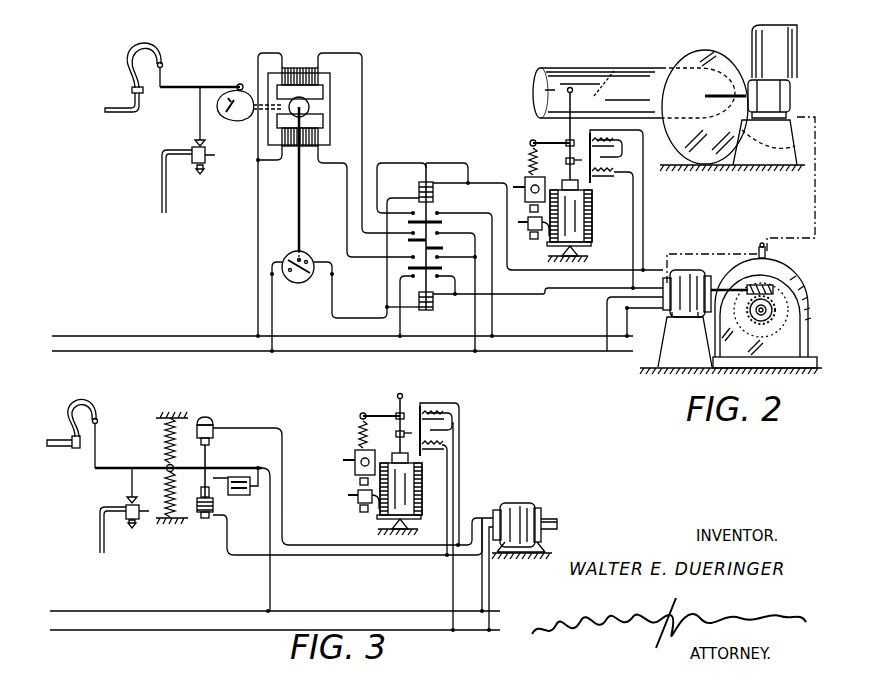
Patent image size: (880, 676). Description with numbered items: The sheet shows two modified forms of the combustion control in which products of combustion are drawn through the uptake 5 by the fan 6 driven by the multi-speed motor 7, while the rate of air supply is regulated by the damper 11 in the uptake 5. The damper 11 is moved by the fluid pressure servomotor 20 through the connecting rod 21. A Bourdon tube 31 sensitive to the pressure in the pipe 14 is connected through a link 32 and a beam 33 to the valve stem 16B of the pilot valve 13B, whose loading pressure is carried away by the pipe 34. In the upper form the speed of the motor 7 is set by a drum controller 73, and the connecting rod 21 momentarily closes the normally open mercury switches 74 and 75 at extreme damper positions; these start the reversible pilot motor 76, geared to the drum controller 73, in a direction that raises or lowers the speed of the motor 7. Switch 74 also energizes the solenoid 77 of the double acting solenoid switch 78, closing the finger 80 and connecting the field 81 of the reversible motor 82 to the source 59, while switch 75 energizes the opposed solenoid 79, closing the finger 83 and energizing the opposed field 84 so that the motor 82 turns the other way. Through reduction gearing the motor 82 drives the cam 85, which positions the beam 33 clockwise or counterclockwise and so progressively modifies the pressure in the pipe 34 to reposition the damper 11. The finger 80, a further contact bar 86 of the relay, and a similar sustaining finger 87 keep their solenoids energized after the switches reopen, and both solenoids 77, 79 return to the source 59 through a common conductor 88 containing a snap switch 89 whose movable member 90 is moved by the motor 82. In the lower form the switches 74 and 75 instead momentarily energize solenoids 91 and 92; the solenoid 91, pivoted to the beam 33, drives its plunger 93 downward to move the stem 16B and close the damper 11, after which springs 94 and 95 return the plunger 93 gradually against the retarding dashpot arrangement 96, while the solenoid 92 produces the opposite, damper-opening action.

In FIG. 2, the uptake or stack 5 is at (562, 72).
In FIG. 2, the fan 6 is at (690, 64).
In FIG. 2, the multi-speed motor 7 is at (752, 72).
In FIG. 2, the damper 11 is at (598, 88).
In FIG. 2, the pipe 14 is at (131, 110).
In FIG. 3, the pipe 14 is at (58, 452).
In FIG. 2, the pilot valve 13B is at (208, 160).
In FIG. 3, the pilot valve 13B is at (140, 527).
In FIG. 2, the valve stem 16B is at (197, 126).
In FIG. 3, the valve stem 16B is at (128, 493).
In FIG. 2, the fluid pressure servomotor 20 is at (564, 219).
In FIG. 3, the fluid pressure servomotor 20 is at (393, 465).
In FIG. 2, the connecting rod 21 is at (567, 134).
In FIG. 2, the Bourdon tube 31 is at (128, 70).
In FIG. 3, the Bourdon tube 31 is at (82, 404).
In FIG. 2, the link 32 is at (162, 78).
In FIG. 2, the beam 33 is at (192, 87).
In FIG. 3, the beam 33 is at (115, 468).
In FIG. 2, the pipe 34 is at (162, 188).
In FIG. 3, the pipe 34 is at (104, 545).
In FIG. 2, the source 59 is at (553, 338).
In FIG. 2, the drum controller 73 is at (785, 278).
In FIG. 2, the mercury switch 74 is at (598, 147).
In FIG. 3, the mercury switch 74 is at (426, 408).
In FIG. 2, the mercury switch 75 is at (600, 178).
In FIG. 3, the mercury switch 75 is at (432, 448).
In FIG. 2, the reversible pilot motor 76 is at (702, 278).
In FIG. 3, the reversible pilot motor 76 is at (520, 506).
In FIG. 2, the solenoid 77 is at (420, 182).
In FIG. 2, the double acting solenoid switch 78 is at (450, 264).
In FIG. 2, the solenoid 79 is at (438, 312).
In FIG. 2, the finger 80 is at (441, 224).
In FIG. 2, the field 81 is at (290, 68).
In FIG. 2, the reversible motor 82 is at (334, 194).
In FIG. 2, the finger 83 is at (446, 248).
In FIG. 2, the field 84 is at (286, 152).
In FIG. 2, the cam 85 is at (226, 120).
In FIG. 2, the contact bar 86 is at (408, 240).
In FIG. 2, the sustaining finger 87 is at (440, 268).
In FIG. 2, the common conductor 88 is at (326, 298).
In FIG. 2, the snap switch 89 is at (306, 259).
In FIG. 2, the movable member 90 is at (286, 284).
In FIG. 3, the solenoid 91 is at (214, 430).
In FIG. 3, the solenoid 92 is at (200, 521).
In FIG. 3, the plunger 93 is at (211, 446).
In FIG. 3, the spring 94 is at (166, 440).
In FIG. 3, the spring 95 is at (166, 497).
In FIG. 3, the dashpot arrangement 96 is at (238, 502).